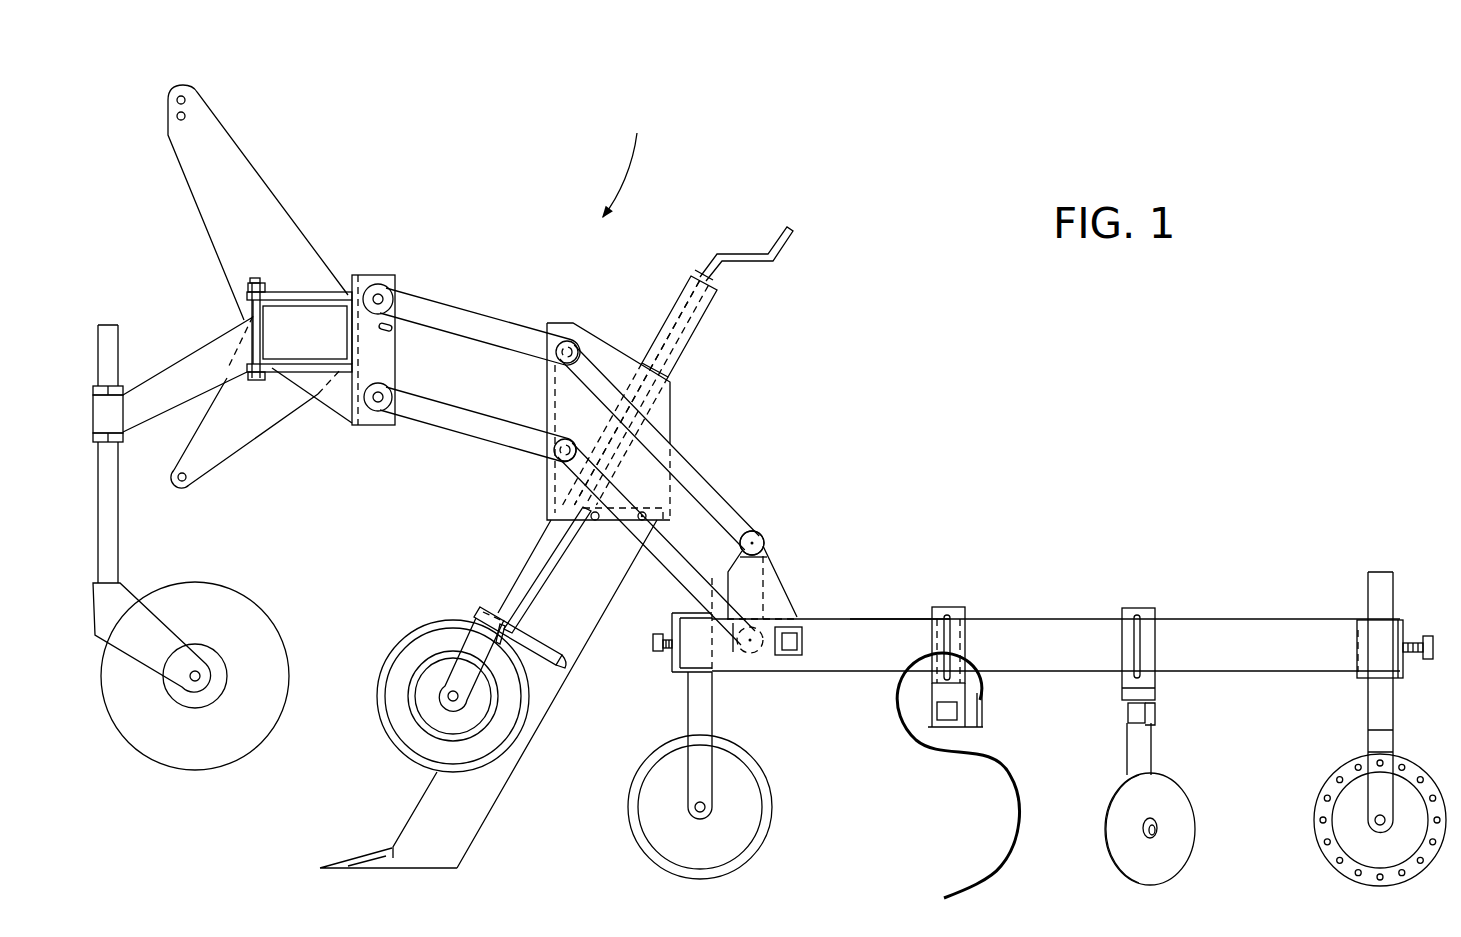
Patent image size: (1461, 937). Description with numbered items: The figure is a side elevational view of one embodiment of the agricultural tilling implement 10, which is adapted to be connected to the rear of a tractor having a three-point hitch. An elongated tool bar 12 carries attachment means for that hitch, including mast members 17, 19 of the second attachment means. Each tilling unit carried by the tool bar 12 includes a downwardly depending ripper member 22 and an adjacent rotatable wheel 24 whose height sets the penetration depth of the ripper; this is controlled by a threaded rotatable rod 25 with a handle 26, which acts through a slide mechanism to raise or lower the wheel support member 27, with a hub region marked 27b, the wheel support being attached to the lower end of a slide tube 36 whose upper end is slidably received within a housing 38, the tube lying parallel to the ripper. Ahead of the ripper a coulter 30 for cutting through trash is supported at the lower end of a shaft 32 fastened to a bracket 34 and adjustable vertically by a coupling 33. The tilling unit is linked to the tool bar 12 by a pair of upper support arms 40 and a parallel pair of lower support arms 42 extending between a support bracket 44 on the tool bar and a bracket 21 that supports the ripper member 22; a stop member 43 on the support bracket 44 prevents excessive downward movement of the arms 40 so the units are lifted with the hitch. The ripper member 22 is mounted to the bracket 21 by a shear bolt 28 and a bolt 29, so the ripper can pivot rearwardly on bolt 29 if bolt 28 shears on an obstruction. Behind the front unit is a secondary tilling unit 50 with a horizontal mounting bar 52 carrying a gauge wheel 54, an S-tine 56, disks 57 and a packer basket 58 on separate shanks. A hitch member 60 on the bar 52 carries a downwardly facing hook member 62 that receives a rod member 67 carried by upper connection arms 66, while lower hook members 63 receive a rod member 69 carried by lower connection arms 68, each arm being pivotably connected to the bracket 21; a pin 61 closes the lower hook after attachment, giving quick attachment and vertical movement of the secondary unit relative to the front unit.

The agricultural tilling implement 10 is at (628, 159).
The tool bar 12 is at (303, 361).
The mast member 17 is at (186, 88).
The mast member 19 is at (205, 473).
The bracket 21 is at (594, 335).
The ripper member 22 is at (413, 808).
The wheel 24 is at (400, 647).
The threaded rotatable rod 25 is at (664, 300).
The handle 26 is at (782, 229).
The wheel support member 27 is at (490, 608).
The wheel hub 27b is at (500, 690).
The shear bolt 28 is at (596, 521).
The bolt 29 is at (645, 512).
The coulter 30 is at (253, 613).
The shaft 32 is at (113, 350).
The coupling 33 is at (121, 412).
The bracket 34 is at (153, 414).
The slide tube 36 is at (533, 551).
The housing 38 is at (678, 357).
The upper support arm 40 is at (505, 320).
The lower support arm 42 is at (470, 412).
The stop member 43 is at (393, 300).
The support bracket 44 is at (372, 284).
The secondary tilling unit 50 is at (1038, 616).
The horizontal mounting bar 52 is at (880, 617).
The gauge wheel 54 is at (755, 755).
The S-tine 56 is at (1018, 762).
The disks 57 is at (1177, 793).
The packer basket 58 is at (1314, 828).
The hitch member 60 is at (802, 580).
The pin 61 is at (755, 653).
The downwardly facing hook member 62 is at (720, 540).
The downwardly facing hook member 63 is at (733, 642).
The upper connection arm 66 is at (700, 473).
The rod member 67 is at (757, 540).
The lower connection arm 68 is at (677, 555).
The rod member 69 is at (764, 655).